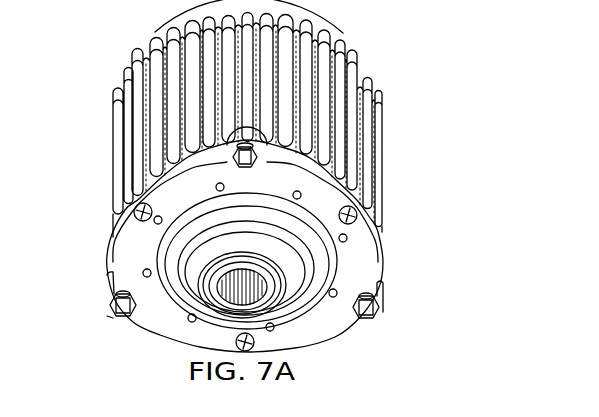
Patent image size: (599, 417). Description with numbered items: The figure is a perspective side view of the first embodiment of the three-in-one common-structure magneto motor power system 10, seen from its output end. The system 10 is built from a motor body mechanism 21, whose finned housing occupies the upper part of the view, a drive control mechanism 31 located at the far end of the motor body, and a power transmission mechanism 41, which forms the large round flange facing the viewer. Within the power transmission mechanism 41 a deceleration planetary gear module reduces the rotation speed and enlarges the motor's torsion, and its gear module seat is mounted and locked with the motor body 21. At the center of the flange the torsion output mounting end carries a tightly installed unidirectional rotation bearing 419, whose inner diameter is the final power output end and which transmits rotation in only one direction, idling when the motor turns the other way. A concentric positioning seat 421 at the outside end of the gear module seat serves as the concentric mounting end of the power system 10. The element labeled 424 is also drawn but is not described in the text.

The 3-in-1 common-structure magneto motor power system 10 is at (500, 15).
The motor body mechanism 21 is at (360, 138).
The drive control mechanism 31 is at (295, 0).
The power transmission mechanism 41 is at (241, 239).
The unidirectional rotation bearing 419 is at (263, 293).
The concentric positioning seat 421 is at (120, 194).
The shaft bearing 424 is at (213, 300).